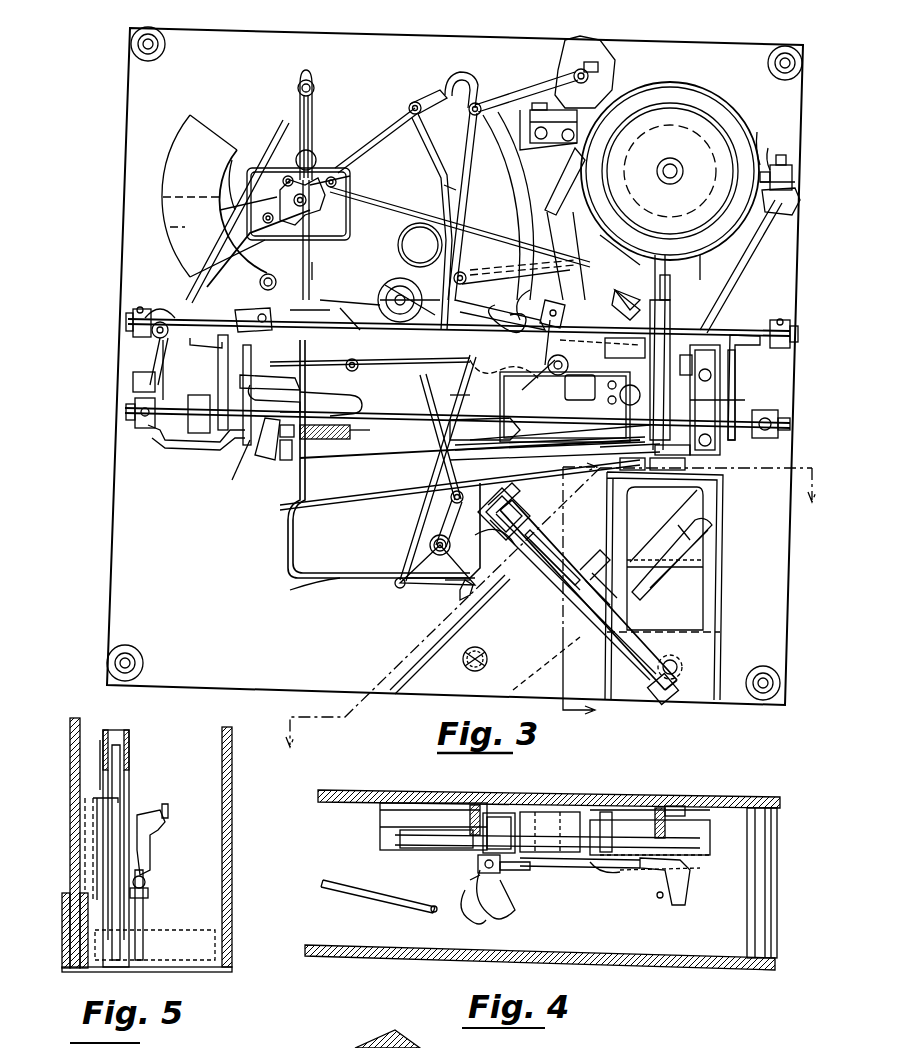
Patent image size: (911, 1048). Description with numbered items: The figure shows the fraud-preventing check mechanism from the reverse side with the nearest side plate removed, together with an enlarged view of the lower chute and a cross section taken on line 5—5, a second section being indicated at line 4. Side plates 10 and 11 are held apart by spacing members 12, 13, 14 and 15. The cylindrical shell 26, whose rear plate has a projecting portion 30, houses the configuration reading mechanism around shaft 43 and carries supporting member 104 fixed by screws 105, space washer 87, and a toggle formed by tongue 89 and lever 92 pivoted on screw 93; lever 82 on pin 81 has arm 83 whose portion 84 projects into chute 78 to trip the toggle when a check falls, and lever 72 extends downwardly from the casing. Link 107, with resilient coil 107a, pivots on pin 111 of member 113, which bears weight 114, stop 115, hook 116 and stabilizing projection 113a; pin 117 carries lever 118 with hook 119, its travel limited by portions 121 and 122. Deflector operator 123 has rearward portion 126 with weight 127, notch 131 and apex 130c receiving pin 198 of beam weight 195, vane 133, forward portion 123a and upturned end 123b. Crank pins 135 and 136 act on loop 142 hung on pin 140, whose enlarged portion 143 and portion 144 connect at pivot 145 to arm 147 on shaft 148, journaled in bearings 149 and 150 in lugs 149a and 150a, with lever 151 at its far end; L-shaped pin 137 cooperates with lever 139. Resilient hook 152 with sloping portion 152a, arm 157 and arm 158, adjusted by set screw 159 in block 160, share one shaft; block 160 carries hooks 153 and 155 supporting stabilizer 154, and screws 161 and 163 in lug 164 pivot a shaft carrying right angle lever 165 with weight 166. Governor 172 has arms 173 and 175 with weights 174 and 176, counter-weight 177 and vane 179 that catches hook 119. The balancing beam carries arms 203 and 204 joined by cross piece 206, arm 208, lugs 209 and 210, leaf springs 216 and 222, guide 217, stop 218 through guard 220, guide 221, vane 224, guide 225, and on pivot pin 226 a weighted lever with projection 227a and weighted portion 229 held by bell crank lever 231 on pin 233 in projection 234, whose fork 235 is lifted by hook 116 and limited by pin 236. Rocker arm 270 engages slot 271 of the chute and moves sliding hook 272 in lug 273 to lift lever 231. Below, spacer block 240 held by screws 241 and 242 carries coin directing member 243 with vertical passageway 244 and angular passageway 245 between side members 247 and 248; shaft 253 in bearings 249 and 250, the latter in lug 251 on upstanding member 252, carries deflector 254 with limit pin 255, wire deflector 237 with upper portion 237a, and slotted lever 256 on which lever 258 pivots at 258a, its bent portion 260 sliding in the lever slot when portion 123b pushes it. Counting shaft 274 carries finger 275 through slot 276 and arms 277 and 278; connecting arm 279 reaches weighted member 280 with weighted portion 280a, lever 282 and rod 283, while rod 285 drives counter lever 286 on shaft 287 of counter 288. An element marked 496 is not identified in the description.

In FIG. 3, the side plate 10 is at (442, 36).
In FIG. 5, the side plate 10 is at (72, 748).
In FIG. 4, the side plate 10 is at (325, 805).
In FIG. 5, the side plate 11 is at (232, 828).
In FIG. 4, the side plate 11 is at (320, 950).
In FIG. 3, the spacing member 12 is at (166, 45).
In FIG. 3, the spacing member 13 is at (802, 63).
In FIG. 3, the spacing member 14 is at (776, 672).
In FIG. 5, the spacing member 14 is at (178, 968).
In FIG. 4, the spacing member 14 is at (775, 878).
In FIG. 3, the spacing member 15 is at (133, 653).
In FIG. 3, the cylindrical shell 26 is at (695, 82).
In FIG. 3, the circular projecting portion 30 is at (706, 128).
In FIG. 3, the shaft 43 is at (681, 170).
In FIG. 3, the lever 72 is at (680, 290).
In FIG. 3, the chute 78 is at (702, 282).
In FIG. 3, the pin 81 is at (796, 183).
In FIG. 3, the lever 82 is at (797, 198).
In FIG. 3, the downwardly projecting arm 83 is at (760, 242).
In FIG. 3, the sidewardly projecting portion 84 is at (707, 362).
In FIG. 3, the space washer 87 is at (756, 132).
In FIG. 3, the tongue 89 is at (768, 148).
In FIG. 3, the lever 92 is at (788, 160).
In FIG. 3, the screw 93 is at (793, 172).
In FIG. 3, the supporting member 104 is at (640, 258).
In FIG. 3, the screws 105 is at (608, 185).
In FIG. 3, the link 107 is at (375, 193).
In FIG. 3, the coil 107a is at (400, 232).
In FIG. 3, the pin 111 is at (283, 181).
In FIG. 3, the member 113 is at (365, 143).
In FIG. 3, the projection 113a is at (528, 135).
In FIG. 3, the weight 114 is at (158, 222).
In FIG. 3, the stop 115 is at (266, 275).
In FIG. 3, the hook 116 is at (519, 335).
In FIG. 3, the pin 117 is at (413, 104).
In FIG. 3, the lever 118 is at (440, 112).
In FIG. 3, the hook 119 is at (445, 188).
In FIG. 3, the laterally projecting portion 121 is at (458, 76).
In FIG. 3, the laterally projecting portion 122 is at (478, 101).
In FIG. 3, the deflector operating member 123 is at (319, 262).
In FIG. 3, the forwardly projecting portion 123a is at (325, 592).
In FIG. 4, the forwardly projecting portion 123a is at (345, 898).
In FIG. 3, the upwardly projecting portion 123b is at (443, 582).
In FIG. 4, the upwardly projecting portion 123b is at (435, 912).
In FIG. 3, the rearwardly projecting portion 126 is at (235, 165).
In FIG. 3, the weight 127 is at (200, 132).
In FIG. 3, the notch 131 is at (308, 390).
In FIG. 3, the plate 133 is at (290, 470).
In FIG. 3, the pin 135 is at (350, 180).
In FIG. 3, the pin 136 is at (218, 195).
In FIG. 3, the L-shaped pin 137 is at (312, 156).
In FIG. 3, the lever 139 is at (260, 130).
In FIG. 3, the pin 140 is at (316, 94).
In FIG. 3, the loop 142 is at (316, 78).
In FIG. 3, the enlarged portion 143 is at (300, 229).
In FIG. 3, the portion 144 is at (312, 270).
In FIG. 3, the pivot connection 145 is at (313, 297).
In FIG. 3, the arm 147 is at (261, 306).
In FIG. 3, the shaft 148 is at (678, 328).
In FIG. 3, the bearing 149 is at (795, 334).
In FIG. 3, the lug 149a is at (795, 320).
In FIG. 3, the bearing 150 is at (130, 319).
In FIG. 3, the lug 150a is at (135, 308).
In FIG. 3, the lever 151 is at (742, 382).
In FIG. 3, the resilient hook 152 is at (256, 306).
In FIG. 3, the sloping portion 152a is at (310, 355).
In FIG. 3, the hook 153 is at (130, 326).
In FIG. 3, the stabilizer 154 is at (240, 430).
In FIG. 3, the lower hook 155 is at (235, 432).
In FIG. 3, the projecting arm 157 is at (170, 310).
In FIG. 3, the downwardly projecting arm 158 is at (140, 370).
In FIG. 3, the set screw 159 is at (130, 385).
In FIG. 3, the block 160 is at (150, 428).
In FIG. 3, the screw 161 is at (130, 409).
In FIG. 3, the screw 163 is at (795, 414).
In FIG. 3, the lug 164 is at (782, 438).
In FIG. 3, the right angle lever 165 is at (214, 372).
In FIG. 3, the weight 166 is at (200, 395).
In FIG. 3, the governor member 172 is at (410, 275).
In FIG. 3, the arm 173 is at (535, 305).
In FIG. 3, the weight 174 is at (557, 187).
In FIG. 3, the arm 175 is at (356, 306).
In FIG. 3, the weight 176 is at (255, 454).
In FIG. 3, the counter-weight 177 is at (472, 380).
In FIG. 3, the vane 179 is at (395, 263).
In FIG. 3, the weight portion 195 is at (285, 468).
In FIG. 3, the pin 198 is at (225, 465).
In FIG. 3, the arm 203 is at (455, 360).
In FIG. 3, the arm 204 is at (360, 456).
In FIG. 3, the cross piece 206 is at (555, 466).
In FIG. 3, the arm 208 is at (745, 398).
In FIG. 3, the lug 209 is at (683, 360).
In FIG. 3, the lug 210 is at (700, 457).
In FIG. 3, the spring 216 is at (530, 450).
In FIG. 3, the guide member 217 is at (420, 391).
In FIG. 3, the stop member 218 is at (372, 472).
In FIG. 3, the guard 220 is at (440, 482).
In FIG. 3, the guide member 221 is at (688, 476).
In FIG. 3, the leaf spring 222 is at (485, 414).
In FIG. 3, the vane 224 is at (748, 372).
In FIG. 3, the guide member 225 is at (612, 356).
In FIG. 3, the pivot pin 226 is at (568, 433).
In FIG. 3, the projection 227a is at (624, 478).
In FIG. 3, the weighted portion 229 is at (610, 445).
In FIG. 3, the bell crank lever 231 is at (563, 360).
In FIG. 3, the pin 233 is at (570, 381).
In FIG. 3, the projection 234 is at (345, 186).
In FIG. 3, the fork 235 is at (500, 315).
In FIG. 3, the pin 236 is at (560, 404).
In FIG. 5, the wire deflecting member 237 is at (85, 860).
In FIG. 3, the upper lateral portion 237a is at (640, 520).
In FIG. 5, the upper lateral portion 237a is at (98, 790).
In FIG. 4, the upper lateral portion 237a is at (640, 808).
In FIG. 3, the spacer block 240 is at (720, 636).
In FIG. 5, the spacer block 240 is at (68, 897).
In FIG. 4, the spacer block 240 is at (425, 810).
In FIG. 3, the screw 241 is at (683, 665).
In FIG. 4, the screw 241 is at (672, 800).
In FIG. 3, the screw 242 is at (498, 652).
In FIG. 4, the screw 242 is at (505, 805).
In FIG. 3, the lower coin directing member 243 is at (732, 500).
In FIG. 5, the lower coin directing member 243 is at (147, 738).
In FIG. 4, the lower coin directing member 243 is at (730, 849).
In FIG. 3, the vertically disposed passageway 244 is at (700, 560).
In FIG. 5, the vertically disposed passageway 244 is at (118, 738).
In FIG. 4, the vertically disposed passageway 244 is at (690, 870).
In FIG. 3, the angularly disposed passageway 245 is at (545, 525).
In FIG. 5, the side member 247 is at (132, 752).
In FIG. 4, the side member 247 is at (400, 848).
In FIG. 5, the side member 248 is at (98, 750).
In FIG. 4, the side member 248 is at (420, 840).
In FIG. 3, the bearing member 249 is at (672, 705).
In FIG. 5, the bearing member 249 is at (150, 950).
In FIG. 4, the bearing member 249 is at (690, 880).
In FIG. 3, the bearing member 250 is at (497, 510).
In FIG. 4, the bearing member 250 is at (470, 866).
In FIG. 3, the lug 251 is at (488, 540).
In FIG. 4, the lug 251 is at (595, 885).
In FIG. 3, the upstanding member 252 is at (528, 520).
In FIG. 4, the upstanding member 252 is at (530, 815).
In FIG. 3, the shaft 253 is at (580, 555).
In FIG. 5, the shaft 253 is at (143, 920).
In FIG. 4, the shaft 253 is at (540, 875).
In FIG. 3, the deflecting member 254 is at (695, 560).
In FIG. 5, the deflecting member 254 is at (160, 850).
In FIG. 4, the deflecting member 254 is at (680, 893).
In FIG. 3, the pin 255 is at (700, 532).
In FIG. 5, the pin 255 is at (172, 812).
In FIG. 4, the pin 255 is at (660, 898).
In FIG. 3, the slotted L-shaped lever 256 is at (420, 578).
In FIG. 4, the slotted L-shaped lever 256 is at (485, 895).
In FIG. 3, the pivoted lever 258 is at (458, 598).
In FIG. 4, the pivoted lever 258 is at (500, 905).
In FIG. 4, the pivot 258a is at (465, 882).
In FIG. 4, the bent over portion 260 is at (488, 928).
In FIG. 3, the rocker arm 270 is at (583, 233).
In FIG. 3, the slot 271 is at (628, 322).
In FIG. 3, the sliding hook member 272 is at (573, 295).
In FIG. 3, the lug 273 is at (565, 318).
In FIG. 3, the shaft 274 is at (428, 538).
In FIG. 3, the finger 275 is at (548, 582).
In FIG. 4, the finger 275 is at (380, 845).
In FIG. 4, the slot 276 is at (380, 828).
In FIG. 3, the arm 277 is at (439, 523).
In FIG. 3, the arm 278 is at (425, 560).
In FIG. 3, the connecting arm 279 is at (368, 384).
In FIG. 3, the weighted member 280 is at (383, 366).
In FIG. 3, the weighted portion 280a is at (350, 286).
In FIG. 3, the lever 282 is at (466, 292).
In FIG. 3, the connecting rod 283 is at (500, 266).
In FIG. 3, the connecting rod 285 is at (468, 177).
In FIG. 3, the counter lever 286 is at (555, 82).
In FIG. 3, the shaft 287 is at (606, 80).
In FIG. 3, the counter member 288 is at (613, 44).
In FIG. 3, the scale 496 is at (320, 438).
In FIG. 3, the apex 130c is at (375, 432).
In FIG. 3, the section line 4- 4 is at (551, 615).
In FIG. 3, the section line 5- 5 is at (560, 592).